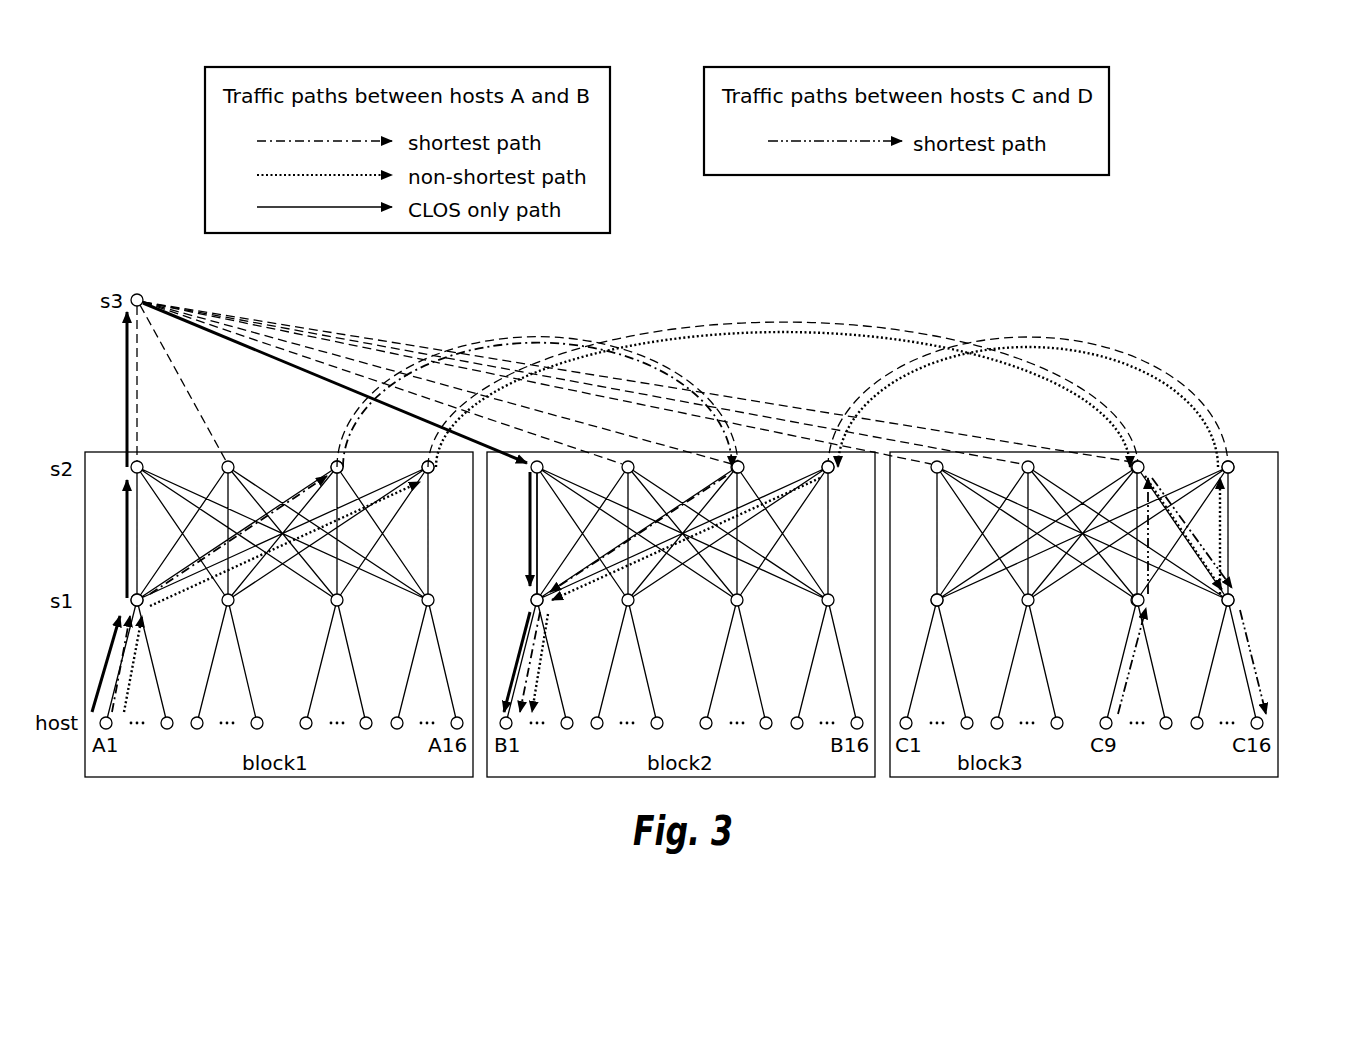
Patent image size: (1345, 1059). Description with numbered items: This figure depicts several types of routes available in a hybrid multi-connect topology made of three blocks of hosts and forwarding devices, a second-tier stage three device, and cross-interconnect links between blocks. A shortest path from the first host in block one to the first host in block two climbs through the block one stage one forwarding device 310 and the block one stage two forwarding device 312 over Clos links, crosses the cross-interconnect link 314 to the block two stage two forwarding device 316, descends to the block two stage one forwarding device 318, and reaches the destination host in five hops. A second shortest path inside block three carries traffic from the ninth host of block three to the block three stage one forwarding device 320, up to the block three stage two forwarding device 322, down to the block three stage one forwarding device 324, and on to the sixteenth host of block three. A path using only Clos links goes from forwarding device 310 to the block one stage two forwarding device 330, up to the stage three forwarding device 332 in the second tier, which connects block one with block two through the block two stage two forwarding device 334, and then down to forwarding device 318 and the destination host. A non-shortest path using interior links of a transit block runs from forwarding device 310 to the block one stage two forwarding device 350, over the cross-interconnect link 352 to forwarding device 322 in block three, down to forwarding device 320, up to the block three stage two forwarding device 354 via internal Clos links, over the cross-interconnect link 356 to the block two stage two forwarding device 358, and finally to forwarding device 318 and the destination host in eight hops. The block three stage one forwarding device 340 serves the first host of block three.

The block 1 stage 1 forwarding device 310 is at (124, 590).
The block 1 stage 2 forwarding device 312 is at (326, 450).
The cross-interconnect link 314 is at (541, 324).
The block 2 stage 2 forwarding device 316 is at (728, 462).
The block 2 stage 1 forwarding device 318 is at (524, 613).
The block 3 stage 1 forwarding device 320 is at (1117, 632).
The block 3 stage 2 forwarding device 322 is at (1112, 452).
The block 3 stage 1 forwarding device 324 is at (1250, 596).
The block 1 stage 2 forwarding device 330 is at (124, 450).
The stage 3 forwarding device 332 is at (161, 276).
The block 2 stage 2 forwarding device 334 is at (526, 507).
The block 3 stage 1 forwarding device 340 is at (927, 612).
The block 1 stage 2 forwarding device 350 is at (466, 499).
The cross-interconnect link 352 is at (767, 307).
The block 3 stage 2 forwarding device 354 is at (1267, 484).
The cross-interconnect link 356 is at (1059, 321).
The block 2 stage 2 forwarding device 358 is at (869, 499).